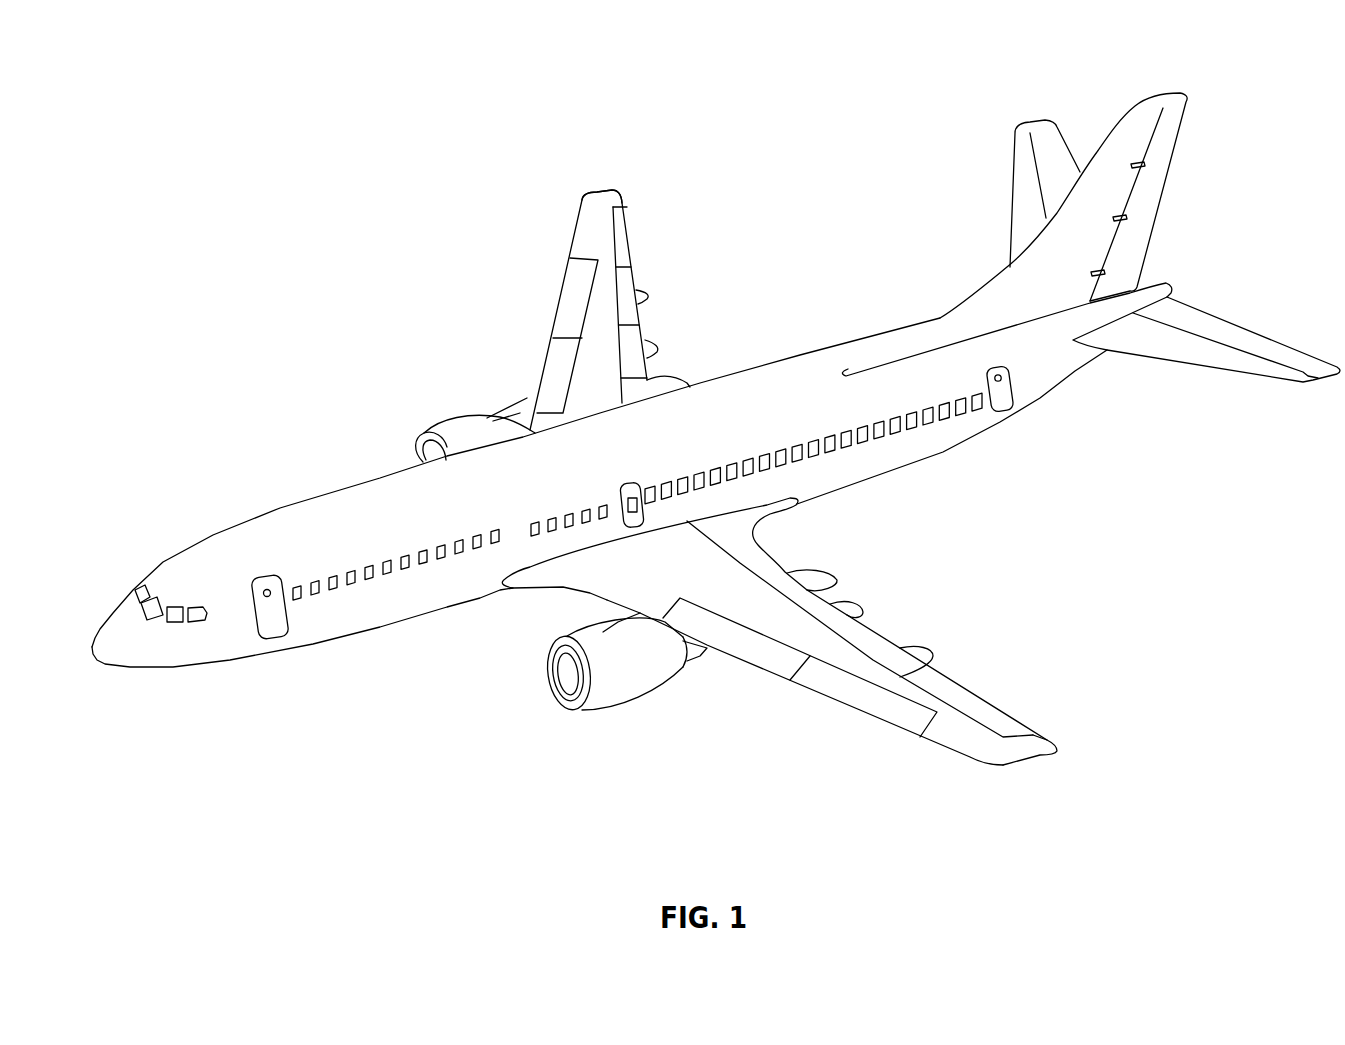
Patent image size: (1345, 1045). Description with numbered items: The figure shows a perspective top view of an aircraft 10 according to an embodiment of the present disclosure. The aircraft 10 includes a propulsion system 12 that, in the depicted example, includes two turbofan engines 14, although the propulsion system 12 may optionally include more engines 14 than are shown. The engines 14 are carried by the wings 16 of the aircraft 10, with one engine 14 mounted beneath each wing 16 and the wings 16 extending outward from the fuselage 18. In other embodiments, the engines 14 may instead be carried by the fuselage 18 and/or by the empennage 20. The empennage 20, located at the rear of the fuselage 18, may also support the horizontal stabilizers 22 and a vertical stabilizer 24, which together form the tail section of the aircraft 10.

The aircraft 10 is at (716, 424).
The propulsion system 12 is at (517, 765).
The turbofan engines 14 is at (630, 678).
The wings 16 is at (1003, 753).
The fuselage 18 is at (350, 613).
The empennage 20 is at (1075, 211).
The horizontal stabilizers 22 is at (1047, 135).
The vertical stabilizer 24 is at (1147, 108).